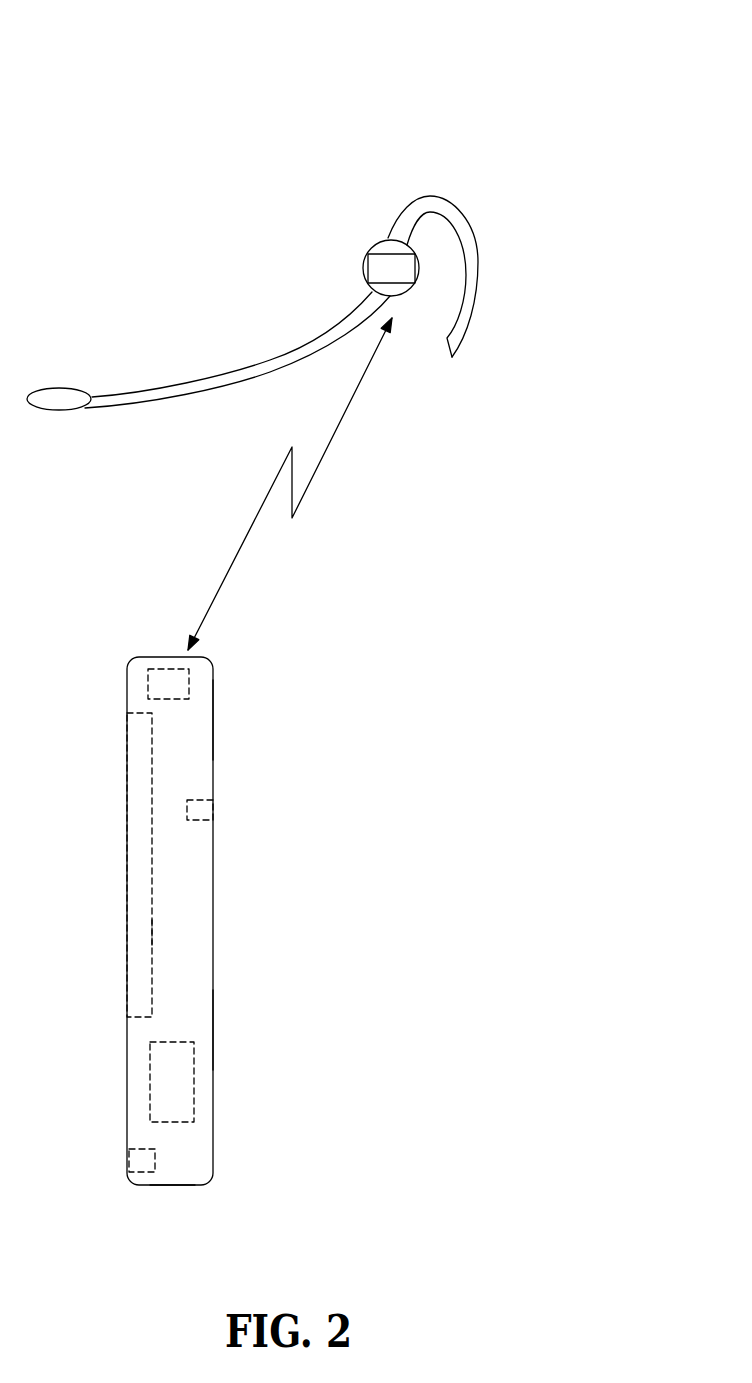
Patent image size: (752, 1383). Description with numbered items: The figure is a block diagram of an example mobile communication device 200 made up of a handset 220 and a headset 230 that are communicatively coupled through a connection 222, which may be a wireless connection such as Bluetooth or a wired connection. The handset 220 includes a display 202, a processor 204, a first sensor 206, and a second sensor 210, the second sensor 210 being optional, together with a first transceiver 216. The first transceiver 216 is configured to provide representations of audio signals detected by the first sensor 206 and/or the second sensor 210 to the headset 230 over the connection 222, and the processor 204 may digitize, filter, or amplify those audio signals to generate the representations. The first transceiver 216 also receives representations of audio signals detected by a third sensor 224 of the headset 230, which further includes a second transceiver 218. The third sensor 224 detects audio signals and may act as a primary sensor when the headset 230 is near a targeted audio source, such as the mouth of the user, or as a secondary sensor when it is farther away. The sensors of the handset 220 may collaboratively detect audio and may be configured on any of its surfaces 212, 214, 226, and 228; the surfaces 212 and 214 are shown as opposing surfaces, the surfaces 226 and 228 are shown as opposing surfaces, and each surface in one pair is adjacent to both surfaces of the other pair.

The mobile communication device 200 is at (673, 68).
The display 202 is at (152, 932).
The processor 204 is at (193, 1080).
The first sensor 206 is at (128, 1158).
The second sensor 210 is at (213, 807).
The surface 212 is at (128, 1033).
The surface 214 is at (213, 1028).
The first transceiver 216 is at (175, 668).
The second transceiver 218 is at (380, 254).
The handset 220 is at (213, 718).
The connection 222 is at (325, 453).
The third sensor 224 is at (68, 388).
The surface 226 is at (187, 1187).
The surface 228 is at (140, 657).
The headset 230 is at (465, 222).